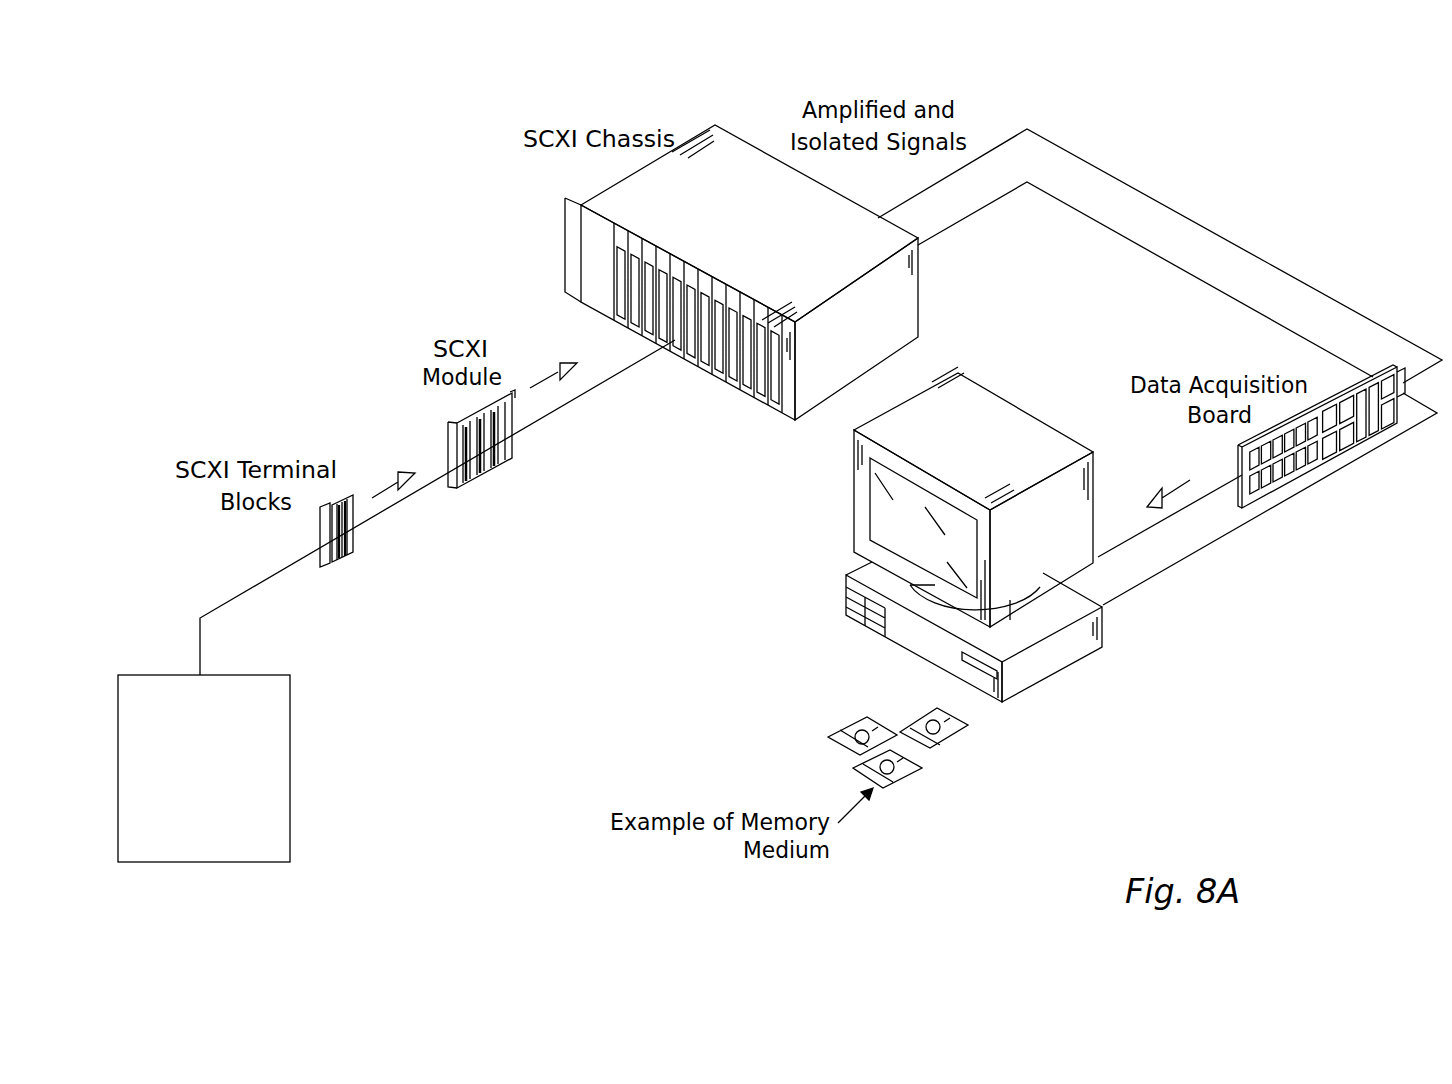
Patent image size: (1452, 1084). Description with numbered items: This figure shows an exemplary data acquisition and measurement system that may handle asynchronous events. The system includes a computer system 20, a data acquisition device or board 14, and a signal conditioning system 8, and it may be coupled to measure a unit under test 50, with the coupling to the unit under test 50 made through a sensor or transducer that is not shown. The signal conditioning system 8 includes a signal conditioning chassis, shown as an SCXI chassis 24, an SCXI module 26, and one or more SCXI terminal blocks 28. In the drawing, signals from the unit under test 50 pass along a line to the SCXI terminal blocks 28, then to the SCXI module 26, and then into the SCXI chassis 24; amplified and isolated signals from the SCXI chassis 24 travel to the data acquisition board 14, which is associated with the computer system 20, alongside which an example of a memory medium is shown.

The signal conditioning system 8 is at (383, 297).
The data acquisition device or board 14 is at (1360, 448).
The computer system 20 is at (985, 392).
The SCXI chassis 24 is at (918, 285).
The SCXI module 26 is at (483, 472).
The SCXI terminal blocks 28 is at (335, 557).
The unit under test 50 is at (218, 850).